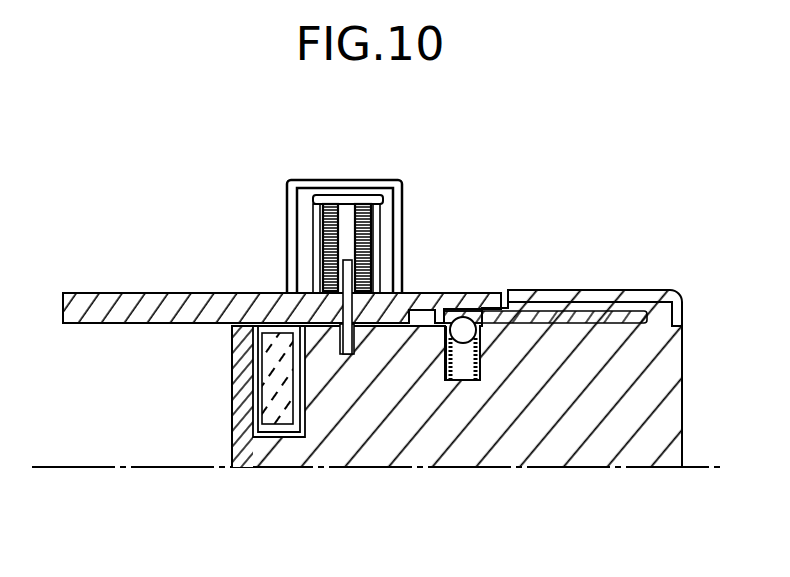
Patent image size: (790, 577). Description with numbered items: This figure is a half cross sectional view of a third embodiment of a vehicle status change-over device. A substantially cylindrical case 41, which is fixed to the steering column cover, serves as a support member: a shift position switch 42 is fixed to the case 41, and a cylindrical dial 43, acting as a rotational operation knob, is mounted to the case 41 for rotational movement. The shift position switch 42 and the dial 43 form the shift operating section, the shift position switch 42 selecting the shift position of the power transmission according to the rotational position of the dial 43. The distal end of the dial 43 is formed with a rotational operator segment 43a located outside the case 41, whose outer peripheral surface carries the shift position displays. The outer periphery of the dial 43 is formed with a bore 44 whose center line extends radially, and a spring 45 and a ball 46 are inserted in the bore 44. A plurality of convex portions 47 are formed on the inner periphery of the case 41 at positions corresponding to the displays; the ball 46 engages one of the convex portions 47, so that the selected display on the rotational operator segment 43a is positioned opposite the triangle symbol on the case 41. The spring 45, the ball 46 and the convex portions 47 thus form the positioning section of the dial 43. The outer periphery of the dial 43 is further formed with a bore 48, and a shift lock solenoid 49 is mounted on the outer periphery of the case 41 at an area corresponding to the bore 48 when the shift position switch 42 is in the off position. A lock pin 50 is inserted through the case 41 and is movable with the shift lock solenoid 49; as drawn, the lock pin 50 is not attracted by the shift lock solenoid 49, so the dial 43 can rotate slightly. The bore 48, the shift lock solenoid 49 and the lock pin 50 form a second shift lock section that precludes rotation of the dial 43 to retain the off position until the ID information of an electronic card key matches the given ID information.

The case 41 is at (173, 305).
The shift position switch 42 is at (277, 343).
The dial 43 is at (579, 335).
The rotational operator segment 43a is at (637, 293).
The bore 44 is at (447, 345).
The spring 45 is at (480, 347).
The ball 46 is at (452, 320).
The convex portions 47 is at (488, 312).
The bore 48 is at (333, 355).
The shift lock solenoid 49 is at (359, 197).
The lock pin 50 is at (372, 267).